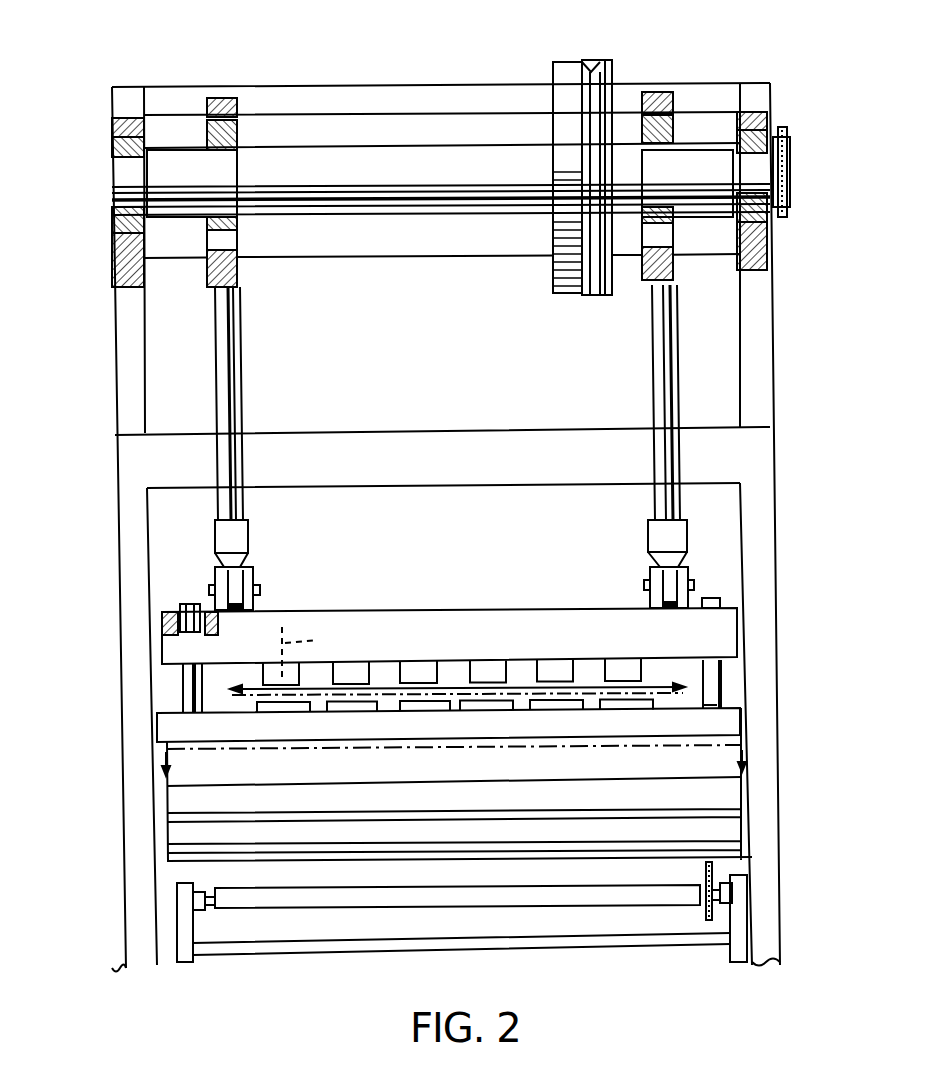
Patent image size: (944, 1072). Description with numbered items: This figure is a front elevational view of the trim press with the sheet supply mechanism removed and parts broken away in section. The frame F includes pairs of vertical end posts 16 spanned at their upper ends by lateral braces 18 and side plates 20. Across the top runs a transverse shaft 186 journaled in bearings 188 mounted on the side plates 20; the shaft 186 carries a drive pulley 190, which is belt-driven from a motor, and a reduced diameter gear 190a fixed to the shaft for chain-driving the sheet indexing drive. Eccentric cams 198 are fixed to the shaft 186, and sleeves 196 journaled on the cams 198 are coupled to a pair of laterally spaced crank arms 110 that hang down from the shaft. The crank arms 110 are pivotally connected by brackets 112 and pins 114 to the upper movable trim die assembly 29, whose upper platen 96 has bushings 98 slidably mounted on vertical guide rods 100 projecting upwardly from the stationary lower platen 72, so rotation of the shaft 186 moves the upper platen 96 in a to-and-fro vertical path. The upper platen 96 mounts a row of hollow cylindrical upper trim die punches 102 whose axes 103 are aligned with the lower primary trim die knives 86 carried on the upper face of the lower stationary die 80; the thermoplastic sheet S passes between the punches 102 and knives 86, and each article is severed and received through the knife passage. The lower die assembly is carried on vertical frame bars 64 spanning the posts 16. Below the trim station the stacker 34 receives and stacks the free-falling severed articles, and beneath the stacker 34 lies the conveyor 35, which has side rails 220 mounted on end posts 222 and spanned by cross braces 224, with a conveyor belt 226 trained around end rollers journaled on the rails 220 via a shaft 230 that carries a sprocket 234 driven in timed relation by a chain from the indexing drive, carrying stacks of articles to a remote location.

The vertical end posts 16 is at (115, 366).
The lateral braces 18 is at (349, 248).
The side plates 20 is at (755, 90).
The upper trim die assembly 29 is at (750, 620).
The stacker 34 is at (137, 838).
The conveyor 35 is at (507, 937).
The frame bars 64 is at (157, 728).
The lower platen 72 is at (495, 780).
The lower stationary die 80 is at (548, 735).
The primary trim die knife 86 is at (663, 702).
The upper platen 96 is at (540, 650).
The bushings 98 is at (165, 616).
The guide rods 100 is at (190, 603).
The upper trim die punches 102 is at (460, 672).
The axes 103 is at (328, 653).
The crank arms 110 is at (240, 360).
The brackets 112 is at (650, 563).
The pins 114 is at (647, 583).
The transverse shaft 186 is at (403, 204).
The bearings 188 is at (110, 229).
The drive pulley 190 is at (614, 66).
The reduced diameter gear 190a is at (785, 220).
The sleeves 196 is at (218, 97).
The eccentric cams 198 is at (240, 135).
The side rails 220 is at (198, 910).
The end posts 222 is at (188, 966).
The cross braces 224 is at (258, 950).
The conveyor belt 226 is at (360, 888).
The shaft 230 is at (210, 888).
The sprocket 234 is at (705, 878).
The frame F is at (792, 452).
The sheet of thermoplastic material S is at (658, 683).